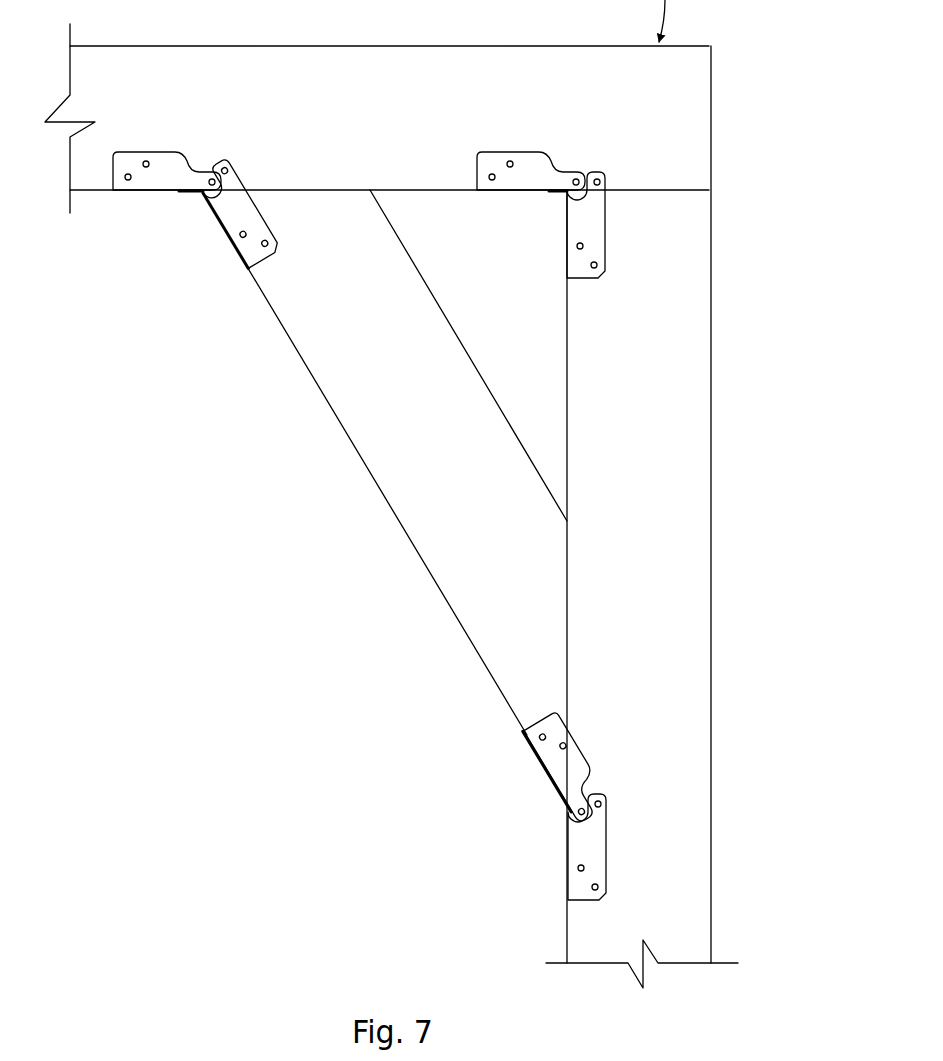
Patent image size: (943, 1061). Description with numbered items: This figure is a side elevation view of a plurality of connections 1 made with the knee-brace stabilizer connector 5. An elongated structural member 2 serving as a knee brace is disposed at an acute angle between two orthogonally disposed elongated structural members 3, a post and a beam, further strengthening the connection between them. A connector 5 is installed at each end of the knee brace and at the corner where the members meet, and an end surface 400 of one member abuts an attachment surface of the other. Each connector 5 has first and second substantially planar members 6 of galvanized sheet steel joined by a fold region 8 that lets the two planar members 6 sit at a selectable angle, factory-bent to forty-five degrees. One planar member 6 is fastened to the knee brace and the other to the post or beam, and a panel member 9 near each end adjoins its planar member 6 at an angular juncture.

The structural connection 1 is at (392, 481).
The elongated structural member 2 is at (295, 363).
The orthogonally disposed elongated structural member 3 is at (716, 333).
The connector 5 is at (496, 147).
The substantially planar member 6 is at (232, 260).
The fold region 8 is at (199, 195).
The panel member 9 is at (472, 178).
The end surface 400 is at (293, 190).